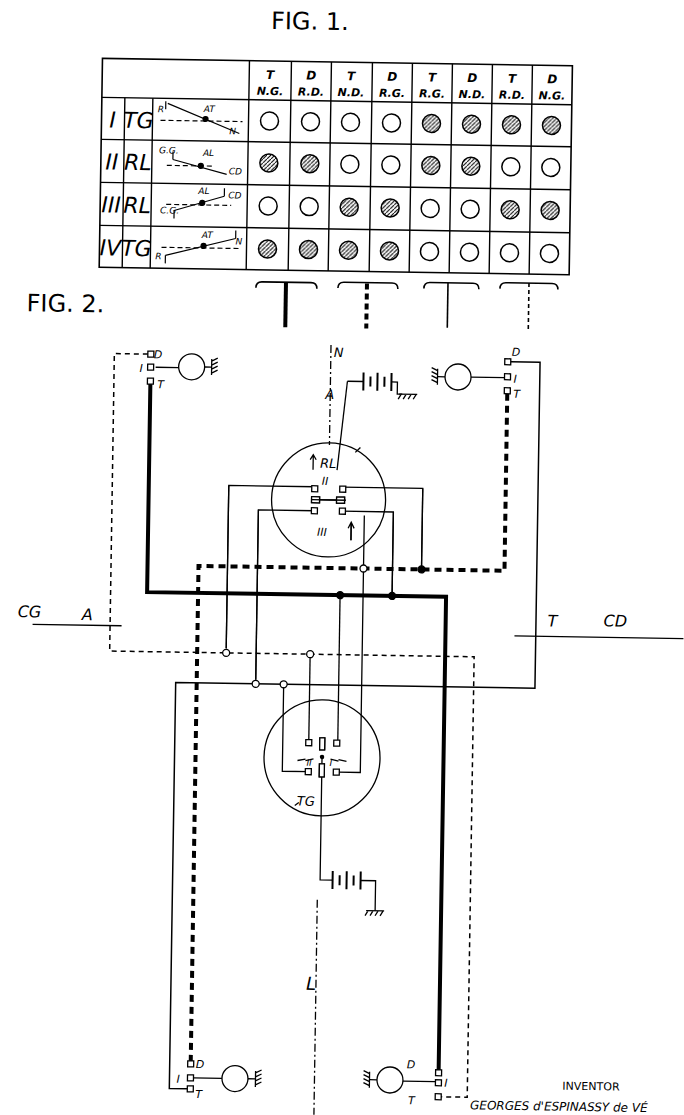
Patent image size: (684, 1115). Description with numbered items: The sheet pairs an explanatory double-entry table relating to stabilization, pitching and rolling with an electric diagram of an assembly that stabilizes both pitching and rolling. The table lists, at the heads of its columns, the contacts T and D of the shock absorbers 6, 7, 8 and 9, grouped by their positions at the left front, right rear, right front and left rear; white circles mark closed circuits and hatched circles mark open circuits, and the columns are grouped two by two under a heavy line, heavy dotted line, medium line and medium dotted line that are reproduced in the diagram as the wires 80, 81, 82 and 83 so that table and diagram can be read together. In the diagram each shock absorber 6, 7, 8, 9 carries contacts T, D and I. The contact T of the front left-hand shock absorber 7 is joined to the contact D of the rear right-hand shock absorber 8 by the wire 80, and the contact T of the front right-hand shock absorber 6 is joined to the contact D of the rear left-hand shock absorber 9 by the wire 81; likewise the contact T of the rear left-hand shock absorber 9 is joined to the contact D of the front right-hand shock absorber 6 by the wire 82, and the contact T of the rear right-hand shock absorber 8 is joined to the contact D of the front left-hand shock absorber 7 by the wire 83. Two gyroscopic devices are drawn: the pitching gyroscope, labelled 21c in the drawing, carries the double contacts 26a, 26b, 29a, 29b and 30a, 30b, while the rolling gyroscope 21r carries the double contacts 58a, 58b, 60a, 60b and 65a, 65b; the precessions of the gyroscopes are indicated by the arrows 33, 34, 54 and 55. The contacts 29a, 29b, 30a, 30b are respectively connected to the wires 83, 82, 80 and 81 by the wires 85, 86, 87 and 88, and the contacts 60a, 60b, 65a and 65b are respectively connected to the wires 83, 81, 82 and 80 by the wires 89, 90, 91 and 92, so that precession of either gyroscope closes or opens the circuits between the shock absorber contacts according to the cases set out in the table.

In FIG. 2, the front right-hand shock absorber 6 is at (450, 365).
In FIG. 2, the front left-hand shock absorber 7 is at (191, 360).
In FIG. 2, the rear right-hand shock absorber 8 is at (389, 1068).
In FIG. 2, the rear left-hand shock absorber 9 is at (240, 1070).
In FIG. 2, the gyroscopic device 21r is at (352, 453).
In FIG. 2, the relay coil TG 21c is at (300, 805).
In FIG. 2, the double contact 26a is at (341, 742).
In FIG. 2, the double contact 26b is at (341, 776).
In FIG. 2, the double contact 29a is at (309, 741).
In FIG. 2, the double contact 29b is at (310, 775).
In FIG. 2, the double contact 30a is at (342, 746).
In FIG. 2, the double contact 30b is at (342, 776).
In FIG. 2, the precession arrow 33 is at (308, 762).
In FIG. 2, the precession arrow 34 is at (342, 762).
In FIG. 2, the precession arrow 54 is at (320, 489).
In FIG. 2, the precession arrow 55 is at (351, 524).
In FIG. 2, the double contact 58a is at (310, 500).
In FIG. 2, the double contact 58b is at (344, 500).
In FIG. 2, the double contact 60a is at (311, 488).
In FIG. 2, the double contact 60b is at (343, 488).
In FIG. 2, the double contact 65a is at (312, 513).
In FIG. 2, the double contact 65b is at (344, 512).
In FIG. 1, the wire 80 is at (283, 318).
In FIG. 2, the wire 80 is at (147, 447).
In FIG. 1, the wire 81 is at (364, 318).
In FIG. 2, the wire 81 is at (502, 454).
In FIG. 1, the wire 82 is at (445, 316).
In FIG. 2, the wire 82 is at (537, 453).
In FIG. 1, the wire 83 is at (526, 316).
In FIG. 2, the wire 83 is at (110, 447).
In FIG. 2, the wire 85 is at (309, 666).
In FIG. 2, the wire 86 is at (286, 752).
In FIG. 2, the wire 87 is at (338, 623).
In FIG. 2, the wire 88 is at (363, 618).
In FIG. 2, the wire 89 is at (227, 506).
In FIG. 2, the wire 90 is at (424, 522).
In FIG. 2, the wire 91 is at (268, 622).
In FIG. 2, the wire 92 is at (392, 549).